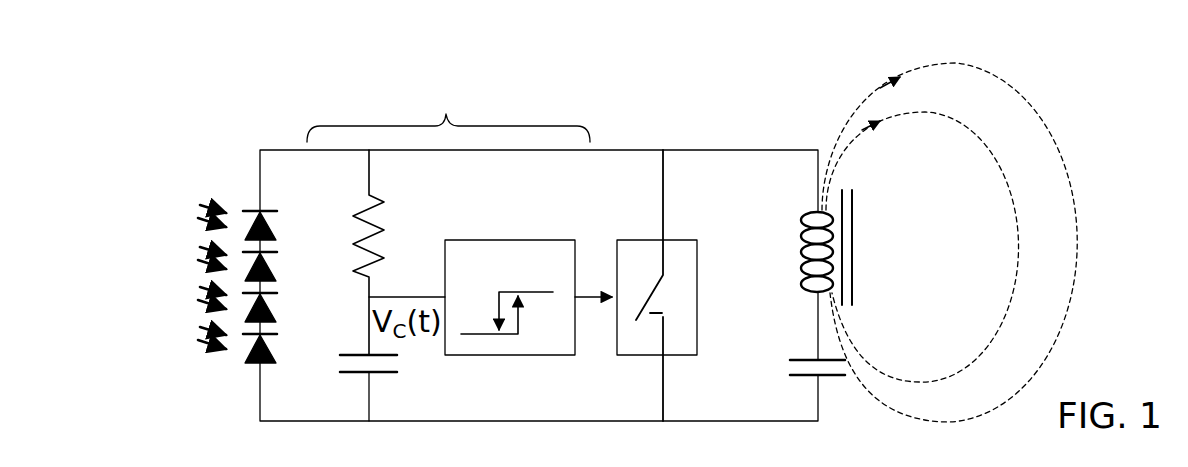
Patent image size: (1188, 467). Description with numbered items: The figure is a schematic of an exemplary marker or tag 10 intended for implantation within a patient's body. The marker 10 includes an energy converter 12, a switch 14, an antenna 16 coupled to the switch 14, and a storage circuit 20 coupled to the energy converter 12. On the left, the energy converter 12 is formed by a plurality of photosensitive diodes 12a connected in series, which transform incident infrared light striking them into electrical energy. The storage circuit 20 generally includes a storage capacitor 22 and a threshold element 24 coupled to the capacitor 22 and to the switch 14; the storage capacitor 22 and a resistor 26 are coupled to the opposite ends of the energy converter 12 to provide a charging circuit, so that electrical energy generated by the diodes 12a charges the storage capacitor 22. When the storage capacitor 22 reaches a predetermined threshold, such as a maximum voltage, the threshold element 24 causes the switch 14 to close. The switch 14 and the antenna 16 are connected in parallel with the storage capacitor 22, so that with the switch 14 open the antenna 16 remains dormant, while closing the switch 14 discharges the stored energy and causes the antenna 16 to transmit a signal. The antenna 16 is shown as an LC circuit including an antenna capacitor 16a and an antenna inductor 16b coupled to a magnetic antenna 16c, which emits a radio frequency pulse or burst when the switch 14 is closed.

The marker 10 is at (623, 110).
The energy converter 12 is at (215, 267).
The photosensitive diodes 12a is at (278, 230).
The switch 14 is at (686, 235).
The antenna 16 is at (908, 261).
The antenna capacitor 16a is at (833, 384).
The antenna inductor 16b is at (792, 257).
The magnetic antenna 16c is at (857, 186).
The storage circuit 20 is at (448, 115).
The storage capacitor 22 is at (340, 364).
The threshold element 24 is at (521, 240).
The resistor 26 is at (379, 243).